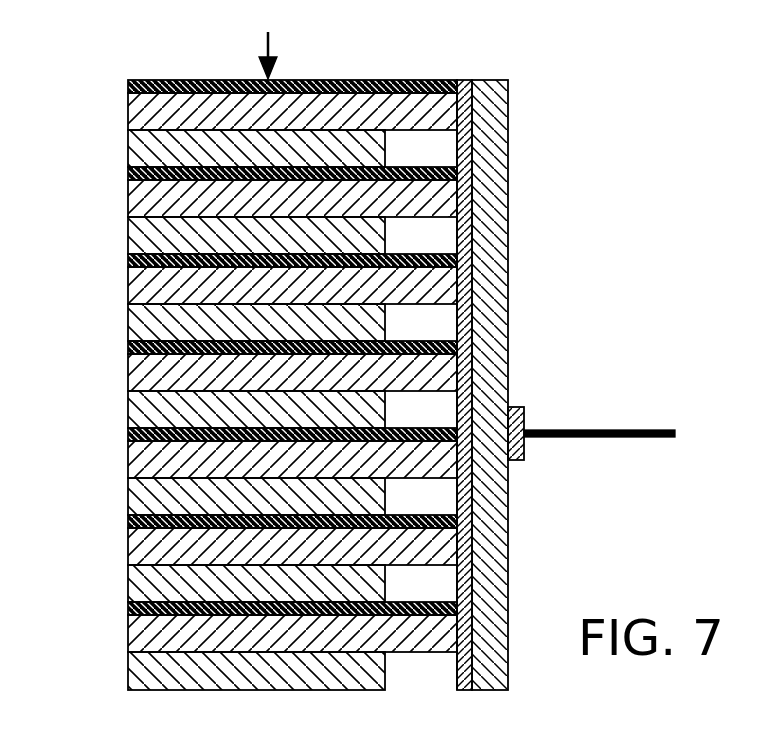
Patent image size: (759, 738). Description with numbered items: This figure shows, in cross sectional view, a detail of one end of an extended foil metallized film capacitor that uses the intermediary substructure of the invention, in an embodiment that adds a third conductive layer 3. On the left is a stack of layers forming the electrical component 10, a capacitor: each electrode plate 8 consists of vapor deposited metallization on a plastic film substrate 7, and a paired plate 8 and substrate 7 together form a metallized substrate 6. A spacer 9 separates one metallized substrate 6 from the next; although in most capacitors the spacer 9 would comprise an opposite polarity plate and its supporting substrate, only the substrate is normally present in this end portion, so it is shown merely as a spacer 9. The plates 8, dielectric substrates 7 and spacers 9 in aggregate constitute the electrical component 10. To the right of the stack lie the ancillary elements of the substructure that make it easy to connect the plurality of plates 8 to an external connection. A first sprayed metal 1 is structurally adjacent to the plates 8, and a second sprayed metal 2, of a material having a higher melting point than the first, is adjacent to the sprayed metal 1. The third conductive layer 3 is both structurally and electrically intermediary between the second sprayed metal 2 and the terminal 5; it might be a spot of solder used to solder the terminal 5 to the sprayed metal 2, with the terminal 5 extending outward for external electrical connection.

The sprayed metal 1 is at (463, 80).
The second sprayed metal 2 is at (510, 194).
The third conductive layer 3 is at (525, 415).
The terminal 5 is at (603, 430).
The metallized substrate 6 is at (236, 355).
The plastic film substrate 7 is at (128, 122).
The electrode plate 8 is at (210, 79).
The spacer 9 is at (128, 146).
The electrical component 10 is at (268, 43).